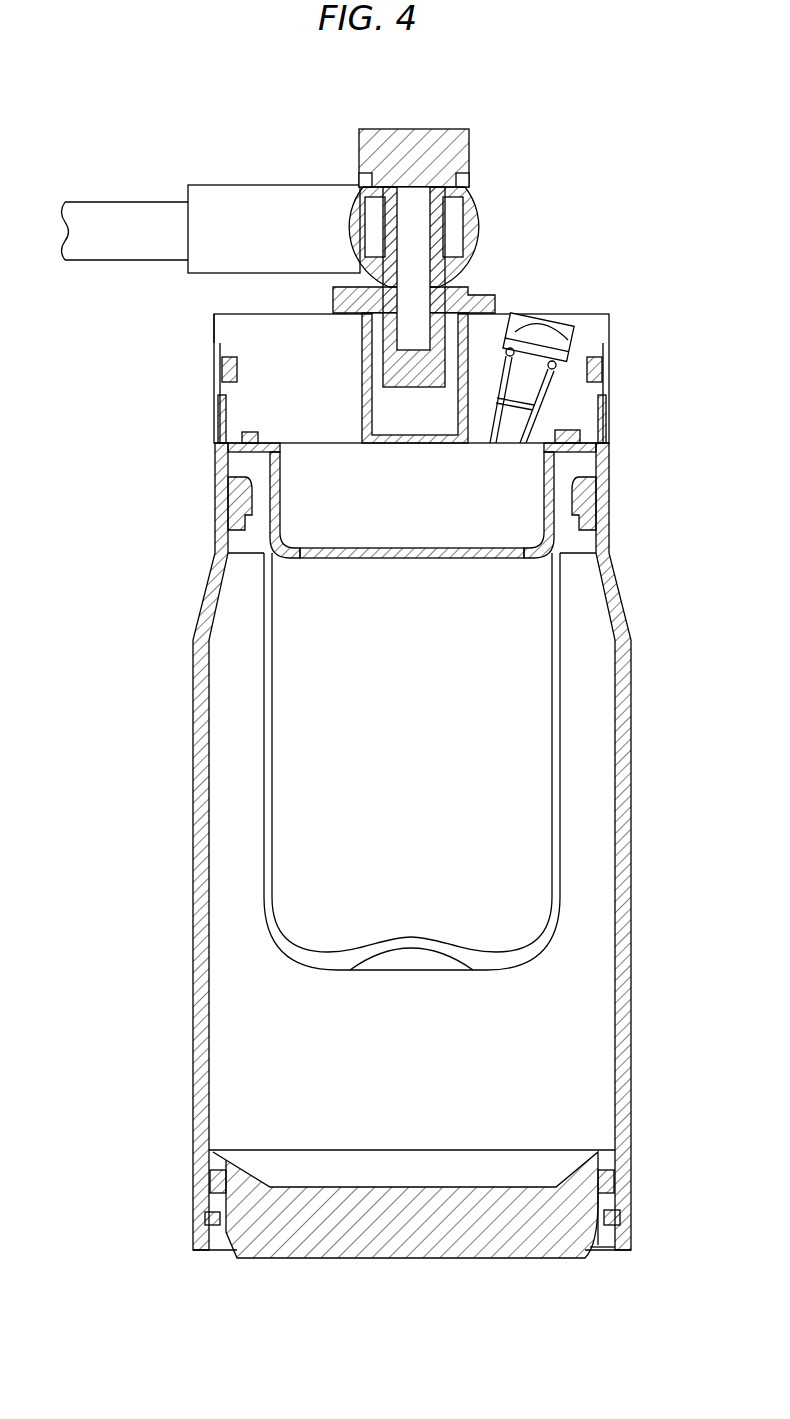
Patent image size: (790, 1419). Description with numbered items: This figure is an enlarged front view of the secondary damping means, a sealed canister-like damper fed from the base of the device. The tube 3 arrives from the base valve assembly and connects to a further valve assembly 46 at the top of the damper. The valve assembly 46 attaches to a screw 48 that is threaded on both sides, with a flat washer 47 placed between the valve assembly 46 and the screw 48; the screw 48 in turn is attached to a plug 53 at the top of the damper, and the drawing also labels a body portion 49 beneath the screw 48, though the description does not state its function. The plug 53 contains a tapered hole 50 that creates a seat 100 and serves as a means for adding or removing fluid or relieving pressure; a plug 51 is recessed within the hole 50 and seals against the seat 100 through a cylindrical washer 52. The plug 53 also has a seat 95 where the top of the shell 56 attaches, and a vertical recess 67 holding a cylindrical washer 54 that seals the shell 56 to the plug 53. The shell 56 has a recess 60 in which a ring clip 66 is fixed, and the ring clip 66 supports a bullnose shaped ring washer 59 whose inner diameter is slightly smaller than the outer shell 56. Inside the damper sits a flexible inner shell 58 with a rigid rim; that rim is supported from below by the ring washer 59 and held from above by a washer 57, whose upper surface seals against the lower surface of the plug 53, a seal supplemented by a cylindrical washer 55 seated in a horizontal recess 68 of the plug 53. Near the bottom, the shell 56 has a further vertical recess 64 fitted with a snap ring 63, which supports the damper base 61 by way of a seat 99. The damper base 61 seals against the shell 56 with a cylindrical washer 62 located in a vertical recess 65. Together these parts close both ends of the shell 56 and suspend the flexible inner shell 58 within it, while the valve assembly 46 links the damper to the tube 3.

The tube 3 is at (124, 212).
The valve assembly 46 is at (428, 140).
The flat washer 47 is at (470, 282).
The screw 48 is at (490, 296).
The valve body 49 is at (520, 313).
The hole 50 is at (568, 322).
The plug 51 is at (578, 338).
The cylindrical washer 52 is at (602, 368).
The plug 53 is at (214, 325).
The cylindrical washer 54 is at (222, 375).
The cylindrical washer 55 is at (252, 432).
The shell 56 is at (197, 1145).
The washer 57 is at (600, 440).
The flexible inner shell 58 is at (585, 470).
The ring washer 59 is at (583, 500).
The recess 60 is at (232, 517).
The damper base 61 is at (604, 1178).
The cylindrical washer 62 is at (607, 1185).
The snap ring 63 is at (215, 1250).
The vertical recess 64 is at (617, 1222).
The vertical recess 65 is at (592, 1215).
The ring clip 66 is at (605, 545).
The vertical recess 67 is at (220, 408).
The horizontal recess 68 is at (232, 448).
The seat 95 is at (216, 345).
The seat 99 is at (208, 1216).
The seat 100 is at (562, 388).